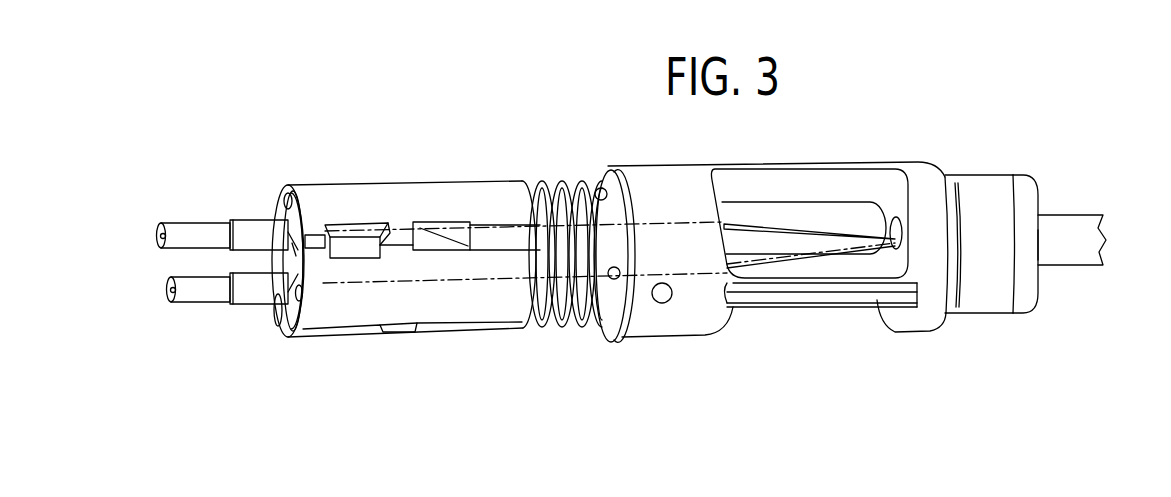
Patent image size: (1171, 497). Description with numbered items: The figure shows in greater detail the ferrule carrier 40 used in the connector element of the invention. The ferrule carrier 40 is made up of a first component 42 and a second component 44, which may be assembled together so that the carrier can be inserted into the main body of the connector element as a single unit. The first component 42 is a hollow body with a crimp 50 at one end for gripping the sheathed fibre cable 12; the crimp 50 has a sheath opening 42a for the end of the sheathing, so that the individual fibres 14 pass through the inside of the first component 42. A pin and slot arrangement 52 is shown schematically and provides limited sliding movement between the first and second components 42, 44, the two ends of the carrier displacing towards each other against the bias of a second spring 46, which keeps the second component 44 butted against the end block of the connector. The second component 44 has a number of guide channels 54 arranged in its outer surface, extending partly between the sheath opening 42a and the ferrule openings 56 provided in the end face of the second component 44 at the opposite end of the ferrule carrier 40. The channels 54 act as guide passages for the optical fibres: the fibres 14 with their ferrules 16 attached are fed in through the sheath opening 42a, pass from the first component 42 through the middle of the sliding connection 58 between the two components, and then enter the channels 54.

The sheathed fibre cable 12 is at (1090, 213).
The individual fibres 14 is at (782, 233).
The ferrules 16 is at (207, 295).
The ferrule carrier 40 is at (972, 148).
The first component 42 is at (922, 317).
The sheath opening 42a is at (1040, 268).
The second component 44 is at (490, 303).
The second spring 46 is at (584, 328).
The crimp 50 is at (997, 297).
The pin and slot arrangement 52 is at (661, 314).
The guide channels 54 is at (347, 337).
The ferrule openings 56 is at (283, 290).
The sliding connection 58 is at (608, 253).